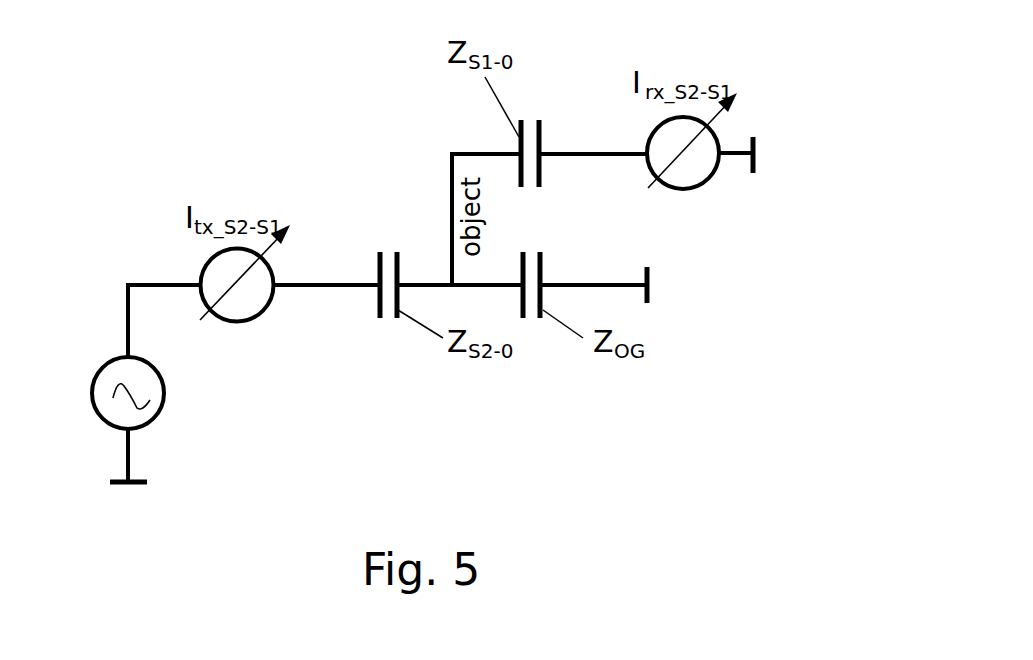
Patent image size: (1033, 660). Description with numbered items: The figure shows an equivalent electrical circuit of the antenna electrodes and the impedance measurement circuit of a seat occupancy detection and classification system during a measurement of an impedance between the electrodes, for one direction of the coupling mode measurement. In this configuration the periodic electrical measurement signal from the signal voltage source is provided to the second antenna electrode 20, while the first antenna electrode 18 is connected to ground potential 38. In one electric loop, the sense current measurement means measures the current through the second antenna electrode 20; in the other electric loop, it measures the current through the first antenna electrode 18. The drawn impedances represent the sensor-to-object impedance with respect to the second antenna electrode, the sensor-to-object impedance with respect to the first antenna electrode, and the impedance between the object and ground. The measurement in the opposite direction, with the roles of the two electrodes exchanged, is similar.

The first antenna electrode 18 is at (585, 152).
The second antenna electrode 20 is at (150, 280).
The ground potential 38 is at (120, 484).